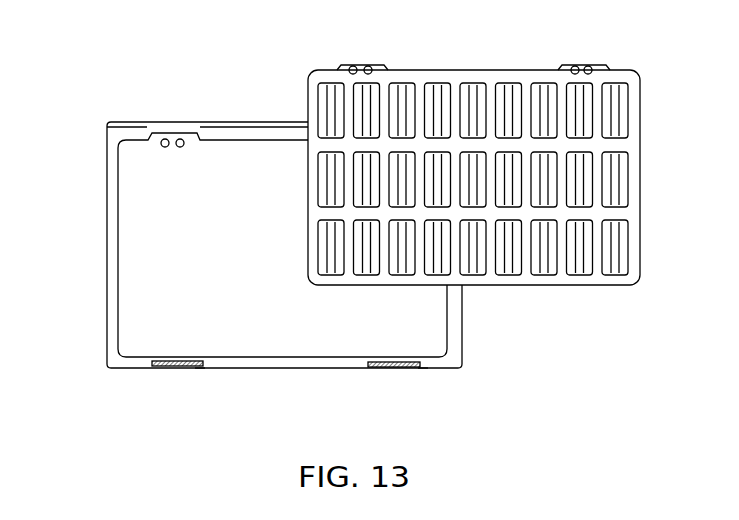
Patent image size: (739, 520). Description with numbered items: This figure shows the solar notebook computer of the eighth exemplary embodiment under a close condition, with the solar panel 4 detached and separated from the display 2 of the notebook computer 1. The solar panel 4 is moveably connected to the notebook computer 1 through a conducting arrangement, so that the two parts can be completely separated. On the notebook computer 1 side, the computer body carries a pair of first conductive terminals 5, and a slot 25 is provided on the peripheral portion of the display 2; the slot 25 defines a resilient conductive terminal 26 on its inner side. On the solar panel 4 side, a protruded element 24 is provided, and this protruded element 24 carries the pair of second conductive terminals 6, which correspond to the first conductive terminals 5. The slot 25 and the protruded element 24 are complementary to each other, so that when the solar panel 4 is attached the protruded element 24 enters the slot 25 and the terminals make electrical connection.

The notebook computer 1 is at (251, 224).
The display 2 is at (237, 245).
The solar panel 4 is at (474, 204).
The first conductive terminals 5 is at (130, 88).
The second conductive terminals 6 is at (447, 48).
The protruded element 24 is at (499, 44).
The slot 25 is at (355, 391).
The resilient conductive terminal 26 is at (251, 387).